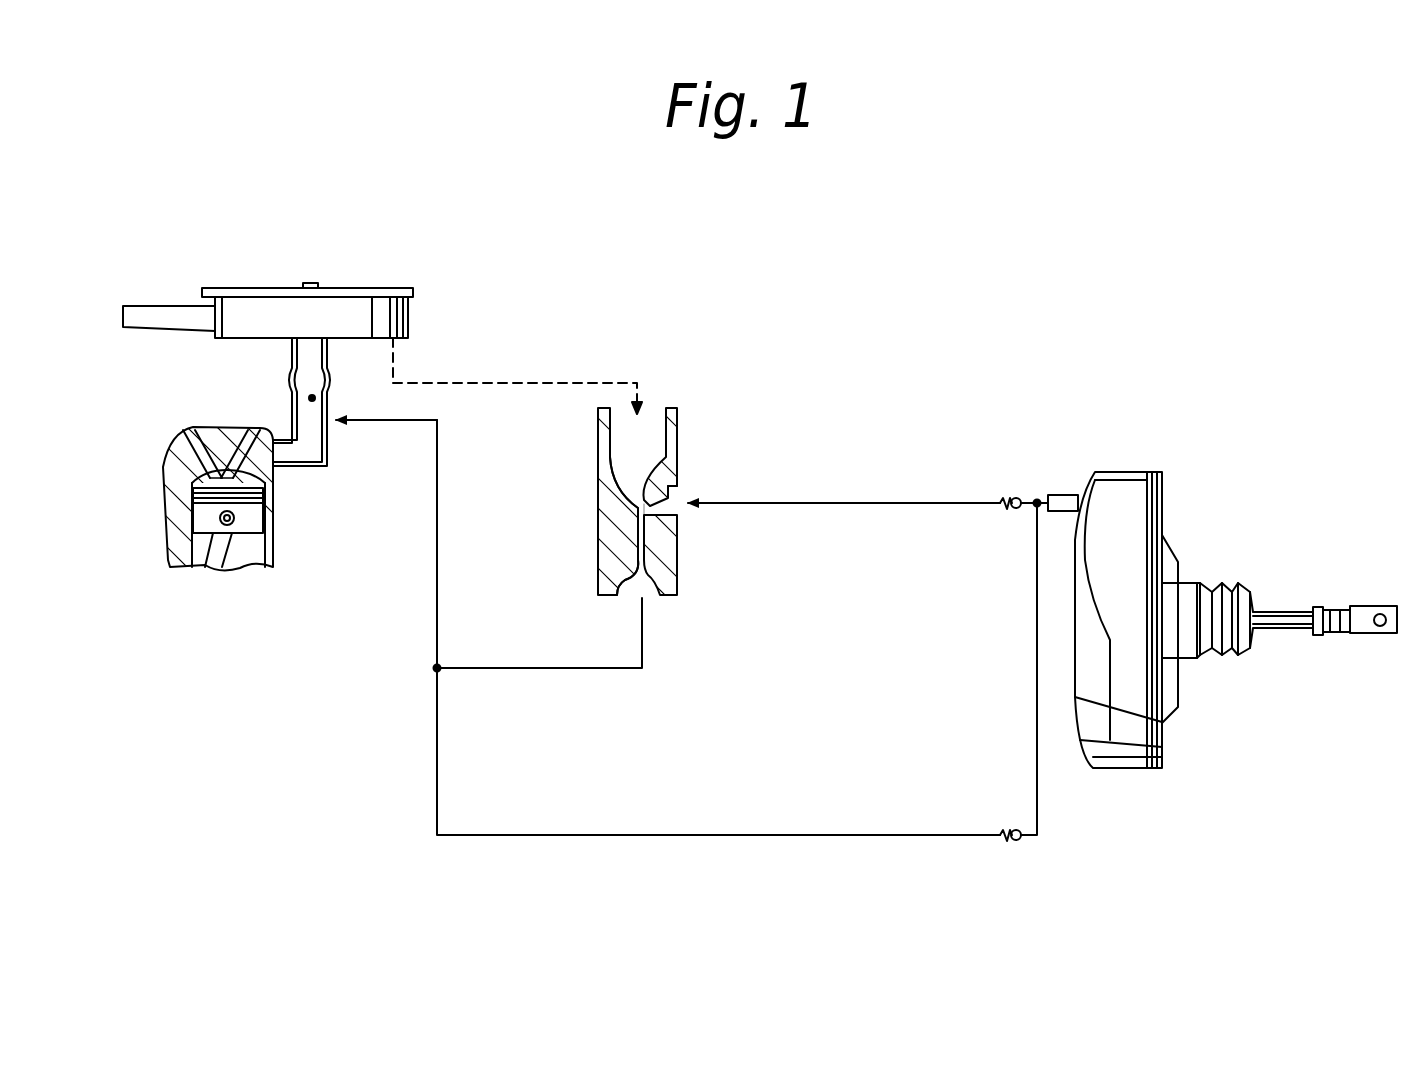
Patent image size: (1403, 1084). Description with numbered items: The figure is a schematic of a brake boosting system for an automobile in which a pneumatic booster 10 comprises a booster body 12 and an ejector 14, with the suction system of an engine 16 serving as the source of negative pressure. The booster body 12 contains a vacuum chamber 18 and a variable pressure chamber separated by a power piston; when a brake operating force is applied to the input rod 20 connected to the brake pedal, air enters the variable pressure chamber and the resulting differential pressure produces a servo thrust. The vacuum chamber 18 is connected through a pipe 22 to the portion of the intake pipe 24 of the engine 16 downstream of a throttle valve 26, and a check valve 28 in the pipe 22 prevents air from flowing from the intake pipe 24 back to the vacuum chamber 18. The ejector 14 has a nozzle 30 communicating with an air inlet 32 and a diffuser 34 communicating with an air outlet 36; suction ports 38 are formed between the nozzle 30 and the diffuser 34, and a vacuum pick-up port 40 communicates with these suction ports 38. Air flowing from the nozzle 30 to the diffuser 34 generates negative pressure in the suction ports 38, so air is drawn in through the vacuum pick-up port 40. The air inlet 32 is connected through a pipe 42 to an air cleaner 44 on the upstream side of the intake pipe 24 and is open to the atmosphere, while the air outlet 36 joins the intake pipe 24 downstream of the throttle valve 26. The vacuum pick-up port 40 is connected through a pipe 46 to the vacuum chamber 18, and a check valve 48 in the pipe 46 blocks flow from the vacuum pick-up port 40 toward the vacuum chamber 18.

The pneumatic booster 10 is at (912, 366).
The booster body 12 is at (1163, 475).
The ejector 14 is at (675, 438).
The engine 16 is at (177, 513).
The vacuum chamber 18 is at (1100, 497).
The input rod 20 is at (1294, 618).
The pipe 22 is at (432, 615).
The intake pipe 24 is at (333, 466).
The throttle valve 26 is at (310, 398).
The check valve 28 is at (1017, 841).
The nozzle 30 is at (633, 510).
The air inlet 32 is at (653, 427).
The diffuser 34 is at (637, 550).
The air outlet 36 is at (630, 580).
The suction ports 38 is at (647, 512).
The vacuum pick-up port 40 is at (675, 508).
The pipe 42 is at (500, 383).
The air cleaner 44 is at (357, 305).
The pipe 46 is at (877, 508).
The check valve 48 is at (1013, 497).